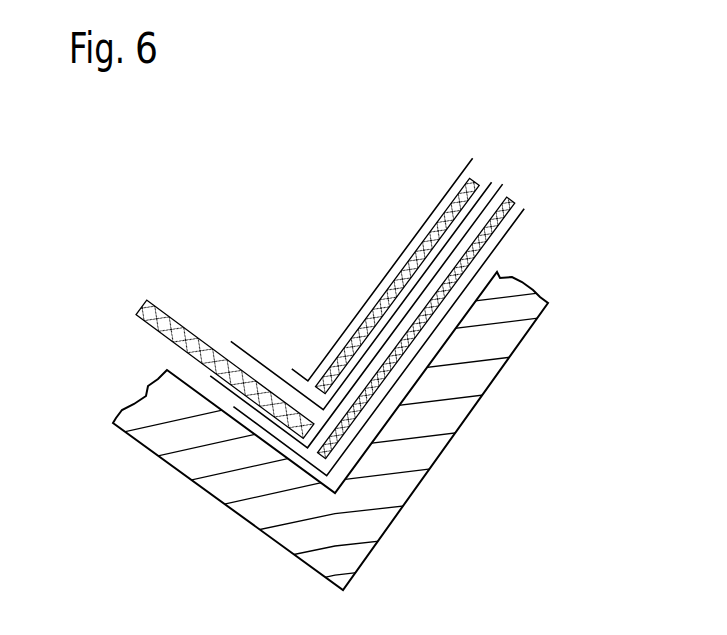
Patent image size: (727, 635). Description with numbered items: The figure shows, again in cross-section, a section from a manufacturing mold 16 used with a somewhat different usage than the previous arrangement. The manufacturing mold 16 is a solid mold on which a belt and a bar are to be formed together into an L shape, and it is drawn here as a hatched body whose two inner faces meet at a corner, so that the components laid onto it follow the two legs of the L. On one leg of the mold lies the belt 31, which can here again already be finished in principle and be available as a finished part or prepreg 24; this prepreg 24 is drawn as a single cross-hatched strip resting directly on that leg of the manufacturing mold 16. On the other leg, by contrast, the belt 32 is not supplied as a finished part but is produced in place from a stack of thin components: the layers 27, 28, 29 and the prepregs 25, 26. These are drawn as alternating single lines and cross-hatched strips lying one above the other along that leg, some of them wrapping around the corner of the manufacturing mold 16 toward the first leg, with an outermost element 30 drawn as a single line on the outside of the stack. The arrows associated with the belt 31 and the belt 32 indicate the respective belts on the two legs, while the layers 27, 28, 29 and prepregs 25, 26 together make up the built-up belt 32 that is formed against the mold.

The manufacturing mold 16 is at (508, 343).
The prepreg 24 is at (150, 302).
The prepreg 25 is at (513, 204).
The prepreg 26 is at (476, 181).
The layer 27 is at (525, 212).
The layer 28 is at (493, 183).
The layer 29 is at (504, 184).
The outer film layer 30 is at (472, 160).
The belt 31 is at (128, 330).
The belt 32 is at (525, 259).